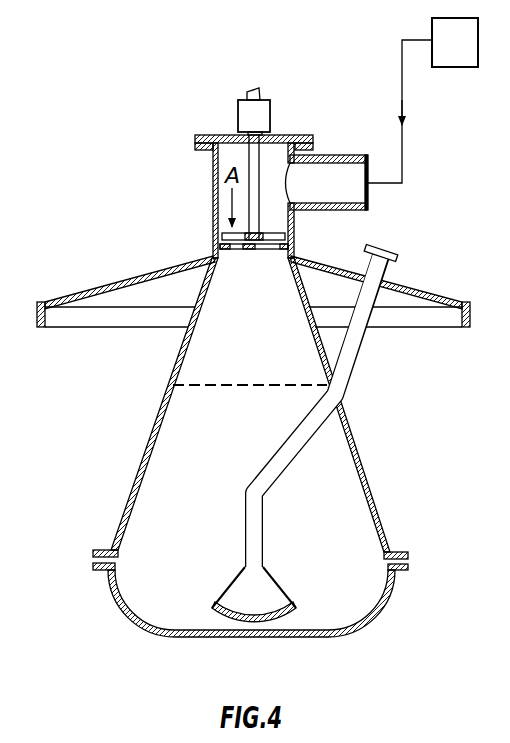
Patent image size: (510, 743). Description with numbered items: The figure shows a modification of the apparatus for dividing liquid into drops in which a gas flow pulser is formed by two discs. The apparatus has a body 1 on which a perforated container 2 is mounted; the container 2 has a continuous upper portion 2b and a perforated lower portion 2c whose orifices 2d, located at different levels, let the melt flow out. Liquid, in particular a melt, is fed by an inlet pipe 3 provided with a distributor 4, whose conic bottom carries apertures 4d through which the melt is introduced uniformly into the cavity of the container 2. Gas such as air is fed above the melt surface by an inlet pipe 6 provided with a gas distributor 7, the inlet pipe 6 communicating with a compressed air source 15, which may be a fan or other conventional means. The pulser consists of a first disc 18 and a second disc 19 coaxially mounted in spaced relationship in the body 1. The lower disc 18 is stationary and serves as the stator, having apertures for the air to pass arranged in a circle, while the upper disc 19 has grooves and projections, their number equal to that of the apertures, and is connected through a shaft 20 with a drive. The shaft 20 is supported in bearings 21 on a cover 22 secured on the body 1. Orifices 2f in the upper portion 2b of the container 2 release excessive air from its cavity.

The body 1 is at (440, 297).
The perforated container 2 is at (397, 533).
The upper portion 2b is at (379, 498).
The lower portion 2c is at (409, 567).
The orifices 2d is at (386, 603).
The orifices 2f is at (352, 421).
The inlet pipe 3 is at (354, 358).
The distributor 4 is at (224, 586).
The apertures 4d is at (217, 609).
The inlet pipe 6 is at (340, 210).
The gas distributor 7 is at (183, 385).
The compressed air source 15 is at (423, 100).
The first disc 18 is at (252, 251).
The second disc 19 is at (293, 229).
The shaft 20 is at (254, 171).
The bearings 21 is at (270, 118).
The cover 22 is at (217, 137).